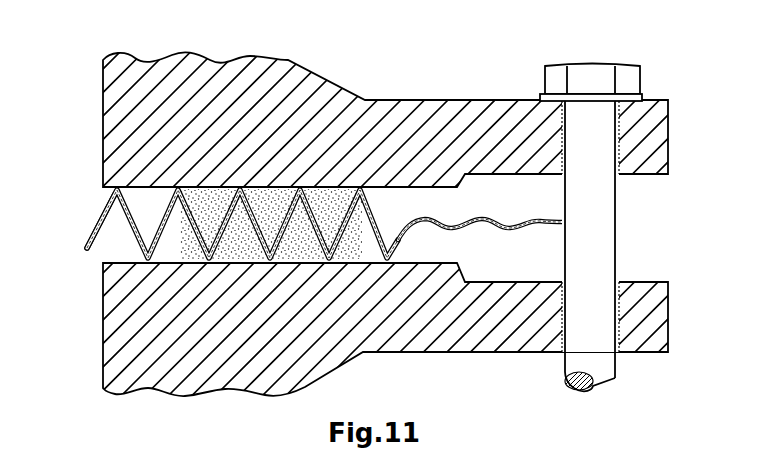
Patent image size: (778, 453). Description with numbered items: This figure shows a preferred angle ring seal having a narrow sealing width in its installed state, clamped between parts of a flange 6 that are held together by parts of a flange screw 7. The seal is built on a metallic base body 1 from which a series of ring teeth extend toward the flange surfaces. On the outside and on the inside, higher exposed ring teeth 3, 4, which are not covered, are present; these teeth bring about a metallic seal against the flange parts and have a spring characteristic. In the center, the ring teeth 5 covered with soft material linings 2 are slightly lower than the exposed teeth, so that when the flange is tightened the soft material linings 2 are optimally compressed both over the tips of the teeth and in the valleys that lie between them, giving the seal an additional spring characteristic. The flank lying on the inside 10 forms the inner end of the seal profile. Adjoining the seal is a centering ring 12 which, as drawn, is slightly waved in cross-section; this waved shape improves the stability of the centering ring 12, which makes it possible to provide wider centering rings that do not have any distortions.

The metallic base body 1 is at (394, 232).
The soft material linings 2 is at (331, 160).
The exposed ring teeth 3 is at (148, 262).
The exposed ring teeth 4 is at (118, 187).
The ring teeth covered with soft material linings 5 is at (240, 188).
The parts of a flange 6 is at (372, 150).
The parts of a flange screw 7 is at (574, 80).
The flank lying on the inside 10 is at (100, 223).
The centering ring 12 is at (515, 222).